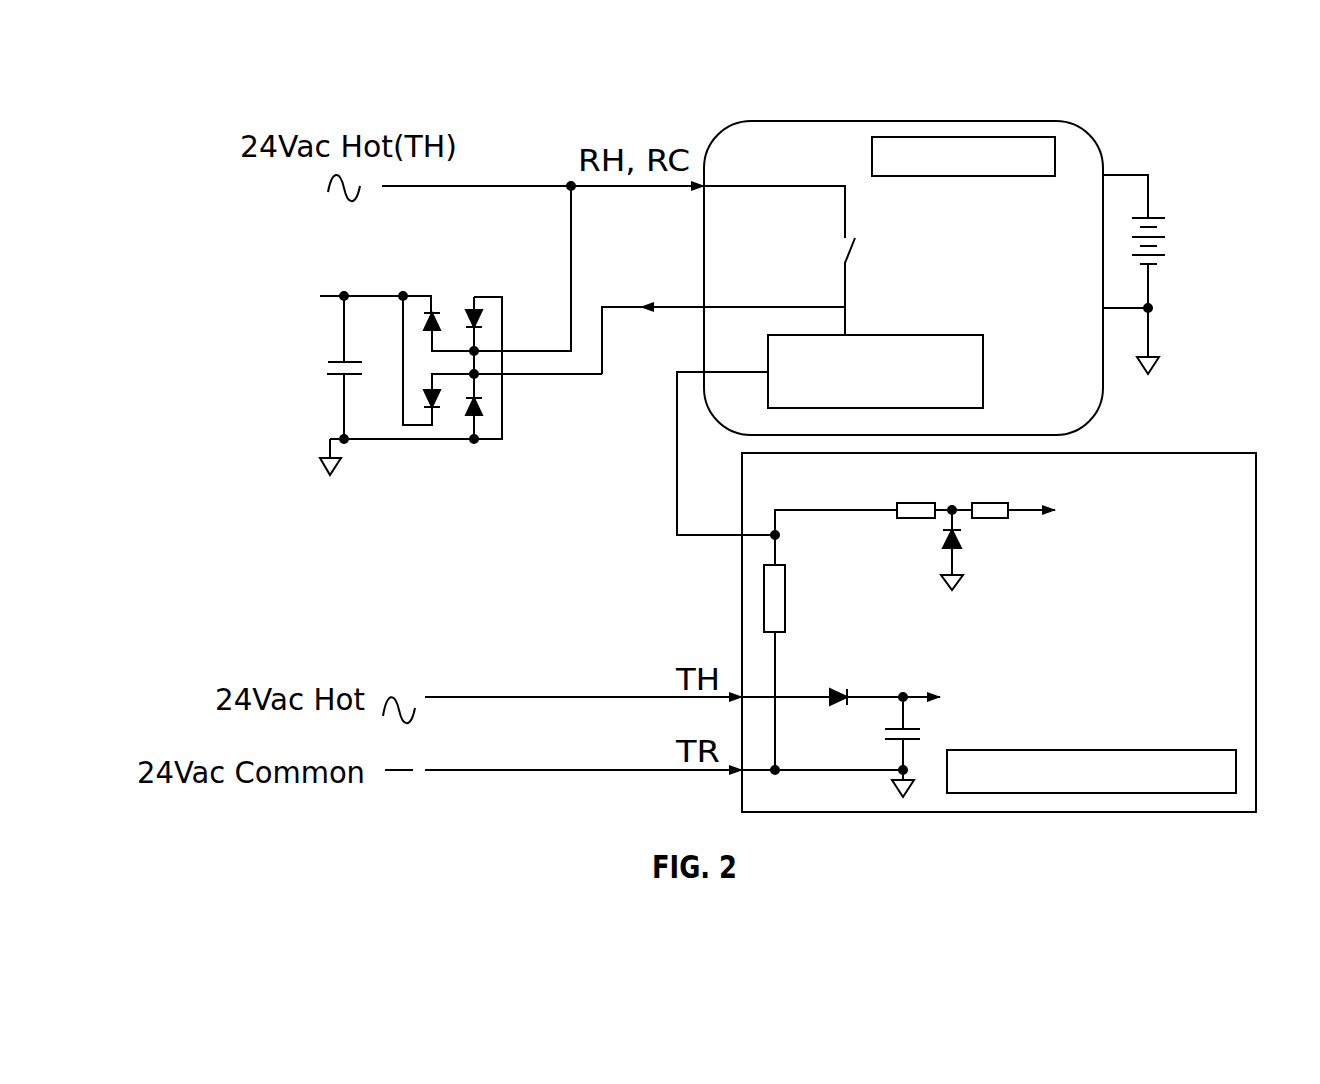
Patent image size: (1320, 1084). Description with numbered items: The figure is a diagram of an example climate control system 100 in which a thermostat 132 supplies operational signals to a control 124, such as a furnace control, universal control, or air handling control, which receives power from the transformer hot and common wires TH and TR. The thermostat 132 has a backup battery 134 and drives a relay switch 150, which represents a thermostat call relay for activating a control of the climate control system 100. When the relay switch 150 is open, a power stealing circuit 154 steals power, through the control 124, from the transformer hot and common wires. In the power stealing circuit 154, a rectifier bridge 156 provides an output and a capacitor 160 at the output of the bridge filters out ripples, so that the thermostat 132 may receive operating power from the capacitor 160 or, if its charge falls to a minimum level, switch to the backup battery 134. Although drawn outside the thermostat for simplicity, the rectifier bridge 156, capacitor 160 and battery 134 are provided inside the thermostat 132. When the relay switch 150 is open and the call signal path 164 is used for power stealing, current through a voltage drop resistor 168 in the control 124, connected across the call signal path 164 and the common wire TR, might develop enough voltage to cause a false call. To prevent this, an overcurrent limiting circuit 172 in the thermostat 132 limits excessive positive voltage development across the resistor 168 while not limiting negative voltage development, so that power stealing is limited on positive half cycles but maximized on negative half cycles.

The climate control system 100 is at (378, 830).
The control 124 is at (1187, 812).
The thermostat 132 is at (773, 120).
The backup battery 134 is at (1153, 158).
The relay switch 150 is at (843, 245).
The power stealing circuit 154 is at (398, 510).
The rectifier bridge 156 is at (437, 302).
The capacitor 160 is at (320, 368).
The call signal path 164 is at (677, 455).
The voltage drop resistor 168 is at (764, 598).
The overcurrent limiting circuit 172 is at (912, 335).